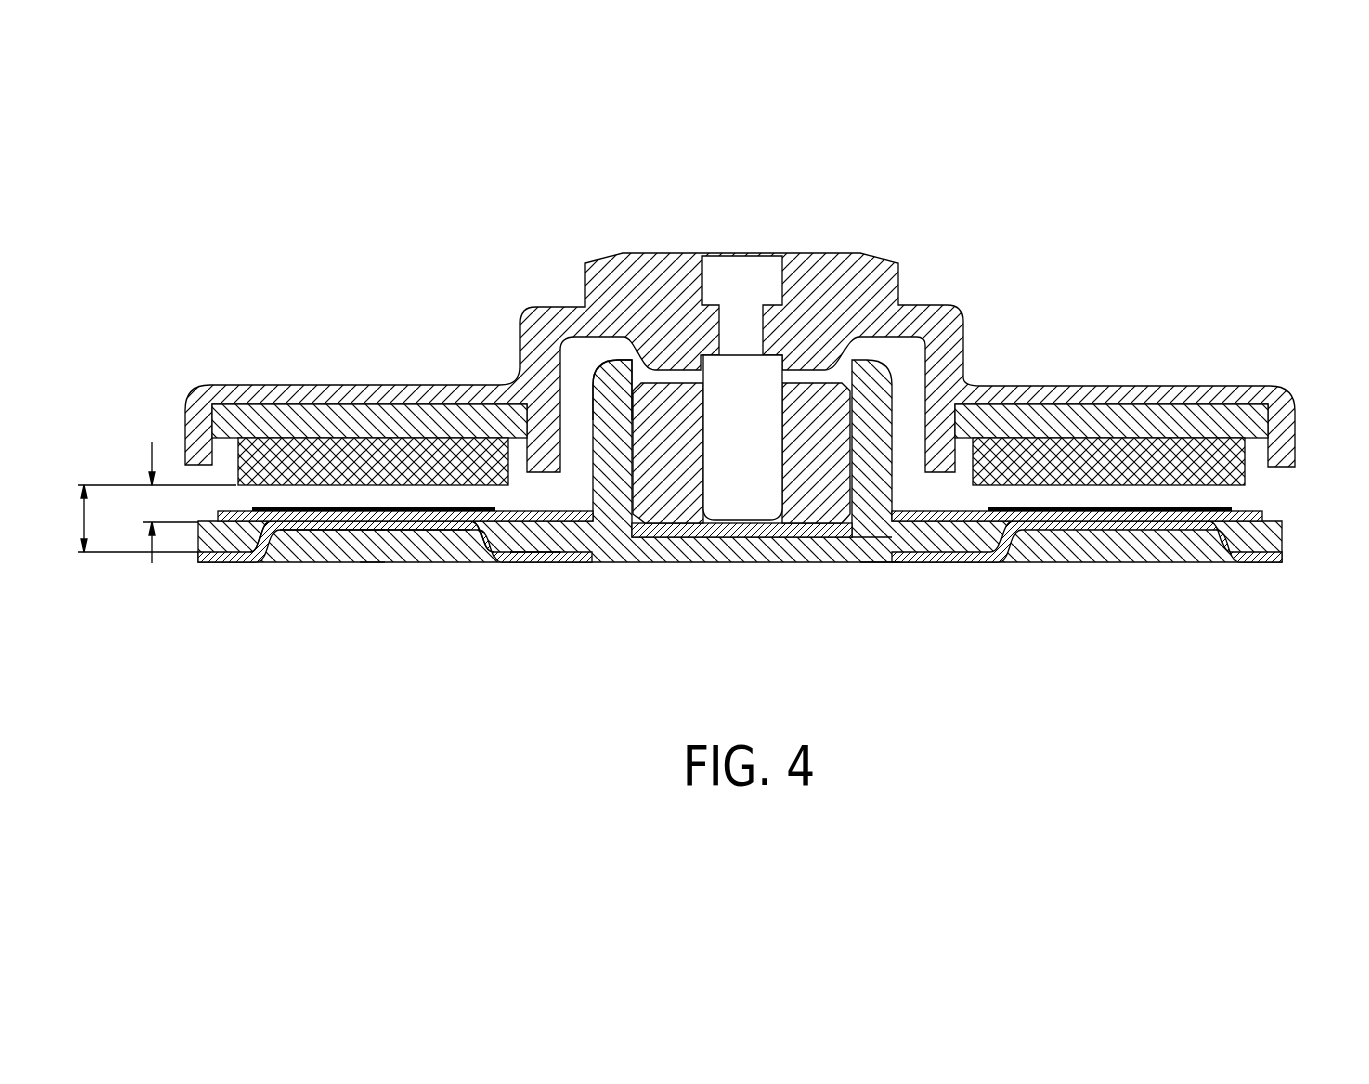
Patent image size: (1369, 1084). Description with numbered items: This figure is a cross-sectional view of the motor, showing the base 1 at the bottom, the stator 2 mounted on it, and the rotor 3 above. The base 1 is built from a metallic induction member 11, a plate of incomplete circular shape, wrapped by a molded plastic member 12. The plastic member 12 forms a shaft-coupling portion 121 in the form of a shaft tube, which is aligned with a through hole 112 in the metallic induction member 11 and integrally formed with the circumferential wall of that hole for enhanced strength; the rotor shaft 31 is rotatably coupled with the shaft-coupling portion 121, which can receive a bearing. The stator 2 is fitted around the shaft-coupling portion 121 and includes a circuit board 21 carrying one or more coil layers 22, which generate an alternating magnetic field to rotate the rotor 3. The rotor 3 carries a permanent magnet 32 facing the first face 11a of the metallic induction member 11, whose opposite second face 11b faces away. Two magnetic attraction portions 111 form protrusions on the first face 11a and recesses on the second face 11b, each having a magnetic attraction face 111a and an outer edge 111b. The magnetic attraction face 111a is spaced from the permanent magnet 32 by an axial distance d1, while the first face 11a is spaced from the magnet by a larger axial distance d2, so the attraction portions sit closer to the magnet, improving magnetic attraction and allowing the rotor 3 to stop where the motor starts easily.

The base 1 is at (751, 427).
The metallic induction member 11 is at (585, 562).
The first face 11a is at (530, 547).
The second face 11b is at (522, 562).
The magnetic attraction portion 111 is at (377, 545).
The magnetic attraction face 111a is at (372, 570).
The outer edge 111b is at (242, 543).
The through hole 112 is at (890, 562).
The plastic member 12 is at (1266, 538).
The shaft-coupling portion 121 is at (613, 407).
The stator 2 is at (781, 537).
The circuit board 21 is at (927, 513).
The coil layer 22 is at (1063, 500).
The rotor 3 is at (1155, 356).
The shaft 31 is at (750, 477).
The permanent magnet 32 is at (280, 462).
The axial distance d1 is at (157, 502).
The axial distance d2 is at (123, 518).